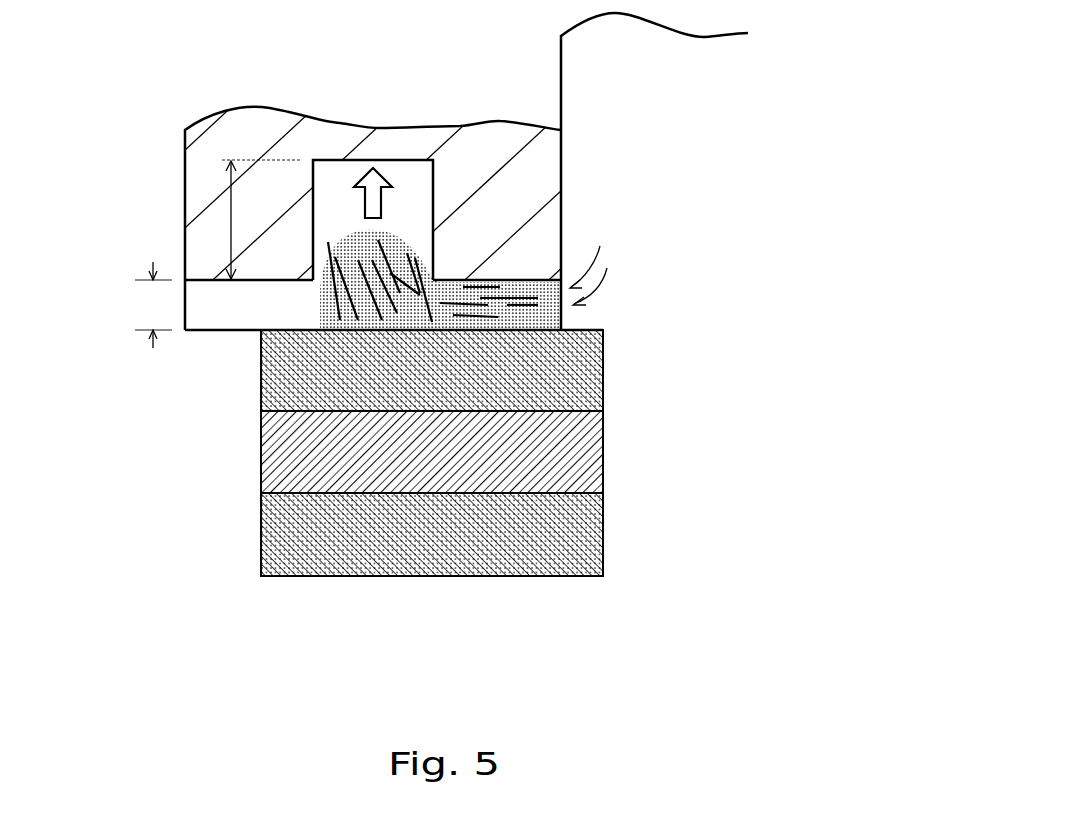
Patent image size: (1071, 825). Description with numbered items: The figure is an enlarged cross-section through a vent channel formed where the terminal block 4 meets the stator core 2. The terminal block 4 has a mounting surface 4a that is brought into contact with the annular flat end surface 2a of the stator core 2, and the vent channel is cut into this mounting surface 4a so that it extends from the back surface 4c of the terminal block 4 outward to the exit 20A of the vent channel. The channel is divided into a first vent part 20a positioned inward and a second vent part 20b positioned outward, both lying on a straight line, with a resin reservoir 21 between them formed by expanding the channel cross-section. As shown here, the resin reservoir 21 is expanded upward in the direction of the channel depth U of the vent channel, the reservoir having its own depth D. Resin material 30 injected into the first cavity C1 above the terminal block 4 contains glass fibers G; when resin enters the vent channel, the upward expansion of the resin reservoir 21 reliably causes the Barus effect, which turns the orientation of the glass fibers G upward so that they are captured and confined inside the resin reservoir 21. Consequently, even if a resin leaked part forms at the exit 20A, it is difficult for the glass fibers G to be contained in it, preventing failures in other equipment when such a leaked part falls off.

The terminal block 4 is at (186, 92).
The mounting surface 4a is at (260, 391).
The back surface 4c is at (565, 219).
The resin reservoir 21 is at (330, 180).
The resin material 30 is at (397, 243).
The first vent part 20a is at (475, 285).
The second vent part 20b is at (200, 286).
The exit of the vent channel 20A is at (218, 332).
The stator core 2 is at (603, 450).
The end surface 2a is at (520, 331).
The glass fibers G is at (333, 243).
The depth of the resin reservoir D is at (253, 219).
The channel depth U is at (153, 305).
The first cavity C1 is at (690, 77).